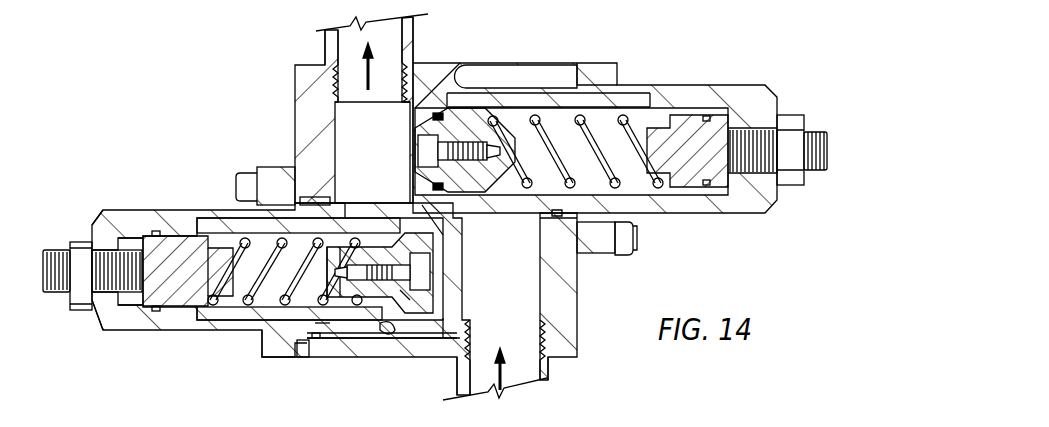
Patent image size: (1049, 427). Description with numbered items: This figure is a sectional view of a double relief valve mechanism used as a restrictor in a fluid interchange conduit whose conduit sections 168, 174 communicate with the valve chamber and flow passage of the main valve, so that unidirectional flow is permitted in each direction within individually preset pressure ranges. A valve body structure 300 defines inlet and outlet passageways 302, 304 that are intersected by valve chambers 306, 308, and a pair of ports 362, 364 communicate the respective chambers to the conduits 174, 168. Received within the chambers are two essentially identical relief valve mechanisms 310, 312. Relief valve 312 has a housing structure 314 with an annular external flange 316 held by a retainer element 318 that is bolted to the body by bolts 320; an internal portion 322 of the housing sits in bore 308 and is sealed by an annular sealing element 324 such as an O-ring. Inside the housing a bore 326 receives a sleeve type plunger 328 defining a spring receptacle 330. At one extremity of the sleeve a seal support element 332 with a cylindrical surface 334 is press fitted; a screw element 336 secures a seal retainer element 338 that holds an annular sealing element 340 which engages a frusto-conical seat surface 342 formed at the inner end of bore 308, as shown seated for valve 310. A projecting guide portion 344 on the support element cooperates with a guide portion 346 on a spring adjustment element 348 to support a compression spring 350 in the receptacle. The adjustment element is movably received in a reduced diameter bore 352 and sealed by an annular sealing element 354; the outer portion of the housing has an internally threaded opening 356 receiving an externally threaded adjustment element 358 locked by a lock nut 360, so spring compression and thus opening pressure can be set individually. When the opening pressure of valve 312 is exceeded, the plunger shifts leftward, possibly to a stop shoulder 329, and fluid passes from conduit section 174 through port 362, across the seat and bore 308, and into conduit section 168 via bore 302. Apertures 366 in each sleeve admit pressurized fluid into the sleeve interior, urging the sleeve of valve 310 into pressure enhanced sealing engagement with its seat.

The conduit section 168 is at (384, 58).
The conduit section 174 is at (548, 370).
The valve body structure 300 is at (513, 75).
The inlet passageway 302 is at (320, 118).
The outlet passageway 304 is at (563, 296).
The valve chamber 306 is at (462, 85).
The valve chamber 308 is at (388, 334).
The relief valve mechanism 310 is at (646, 72).
The relief valve mechanism 312 is at (80, 362).
The housing structure 314 is at (106, 215).
The annular external flange 316 is at (285, 355).
The retainer element 318 is at (275, 175).
The bolts 320 is at (243, 178).
The internal portion 322 is at (330, 334).
The annular sealing element 324 is at (317, 335).
The bore 326 is at (242, 312).
The sleeve type plunger 328 is at (608, 107).
The stop shoulder 329 is at (225, 303).
The spring receptacle 330 is at (245, 308).
The seal support element 332 is at (387, 300).
The cylindrical surface 334 is at (350, 195).
The screw element 336 is at (432, 270).
The seal retainer element 338 is at (445, 297).
The annular sealing element 340 is at (410, 207).
The frusto-conical seat surface 342 is at (458, 327).
The projecting guide portion 344 is at (314, 340).
The guide portion 346 is at (192, 212).
The spring adjustment element 348 is at (185, 300).
The compression spring 350 is at (236, 212).
The reduced diameter bore 352 is at (154, 230).
The annular sealing element 354 is at (165, 305).
The internally threaded opening 356 is at (100, 250).
The externally threaded adjustment element 358 is at (60, 292).
The lock nut 360 is at (88, 312).
The port 362 is at (458, 300).
The port 364 is at (406, 126).
The apertures 366 is at (490, 218).